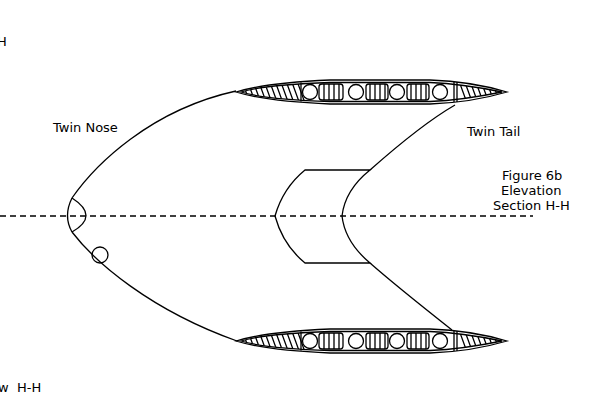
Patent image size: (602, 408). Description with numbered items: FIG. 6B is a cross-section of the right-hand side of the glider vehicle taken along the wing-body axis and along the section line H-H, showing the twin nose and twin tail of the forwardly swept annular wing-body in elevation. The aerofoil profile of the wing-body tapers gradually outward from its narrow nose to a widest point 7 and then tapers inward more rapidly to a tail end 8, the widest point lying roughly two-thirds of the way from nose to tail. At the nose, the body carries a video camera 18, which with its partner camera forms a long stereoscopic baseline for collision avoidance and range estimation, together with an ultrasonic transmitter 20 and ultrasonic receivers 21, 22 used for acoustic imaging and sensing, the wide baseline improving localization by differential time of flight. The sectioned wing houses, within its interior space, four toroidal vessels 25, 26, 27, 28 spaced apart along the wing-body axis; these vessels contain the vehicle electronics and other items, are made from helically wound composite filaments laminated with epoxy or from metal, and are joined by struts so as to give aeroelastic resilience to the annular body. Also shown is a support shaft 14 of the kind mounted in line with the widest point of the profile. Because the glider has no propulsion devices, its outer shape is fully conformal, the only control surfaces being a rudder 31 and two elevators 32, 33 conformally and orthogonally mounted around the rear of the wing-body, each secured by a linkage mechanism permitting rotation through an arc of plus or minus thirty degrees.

The widest point 7 is at (68, 206).
The tail end 8 is at (400, 336).
The L-shaped support shaft 14 is at (118, 144).
The video camera 18 is at (0, 240).
The ultrasonic transmitter 20 is at (357, 354).
The ultrasonic receiver 21 is at (164, 330).
The ultrasonic receiver 22 is at (171, 340).
The toroidal vessel 25 is at (323, 317).
The toroidal vessel 26 is at (364, 317).
The toroidal vessel 27 is at (421, 318).
The toroidal vessel 28 is at (467, 319).
The rudder 31 is at (344, 203).
The elevator 32 is at (485, 77).
The elevator 33 is at (490, 320).